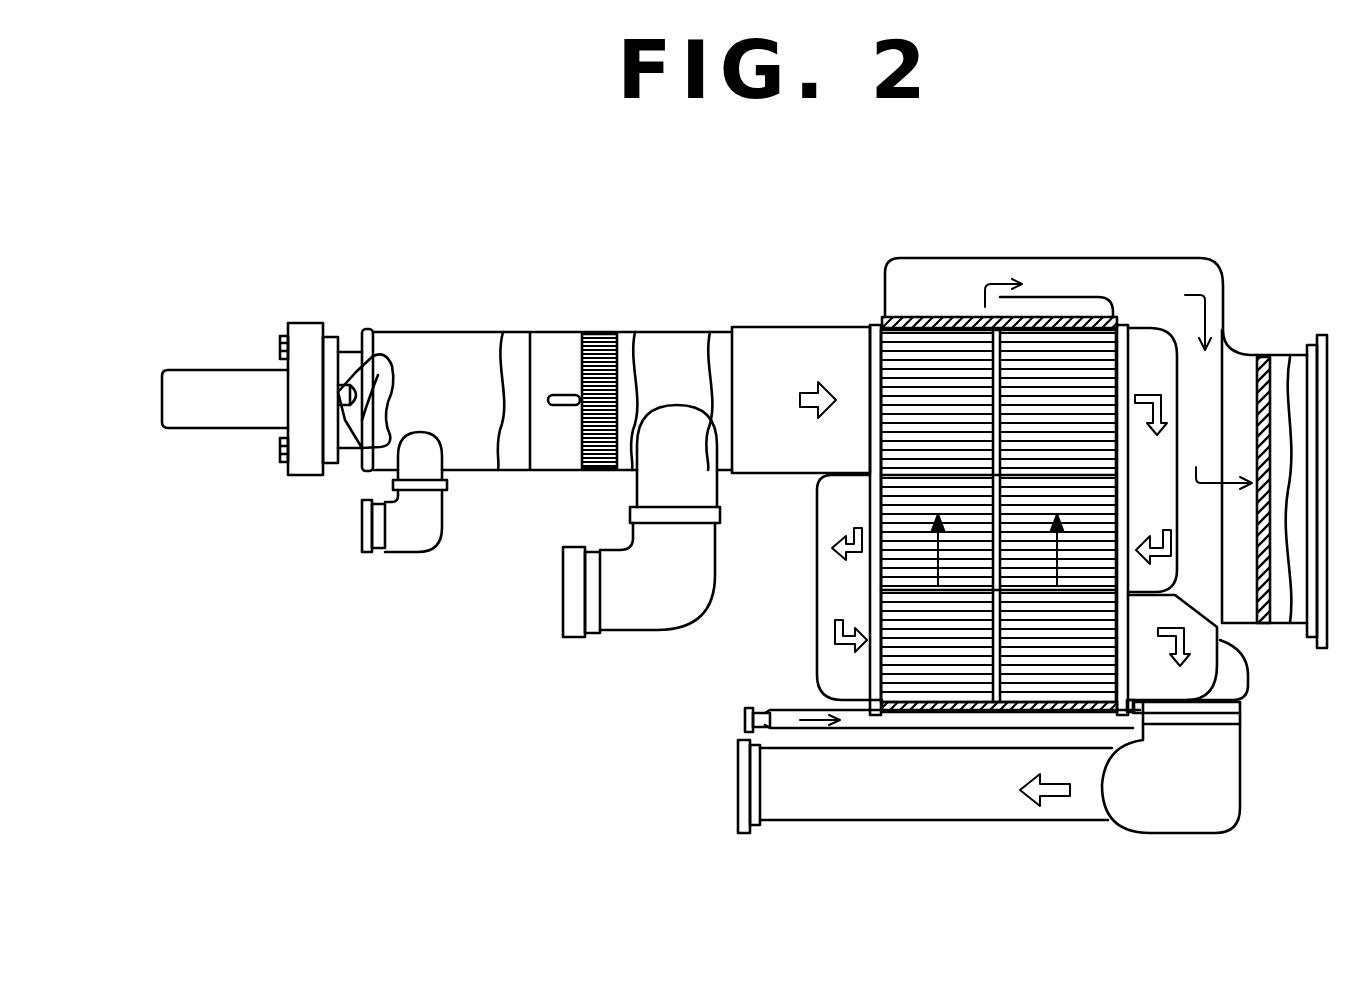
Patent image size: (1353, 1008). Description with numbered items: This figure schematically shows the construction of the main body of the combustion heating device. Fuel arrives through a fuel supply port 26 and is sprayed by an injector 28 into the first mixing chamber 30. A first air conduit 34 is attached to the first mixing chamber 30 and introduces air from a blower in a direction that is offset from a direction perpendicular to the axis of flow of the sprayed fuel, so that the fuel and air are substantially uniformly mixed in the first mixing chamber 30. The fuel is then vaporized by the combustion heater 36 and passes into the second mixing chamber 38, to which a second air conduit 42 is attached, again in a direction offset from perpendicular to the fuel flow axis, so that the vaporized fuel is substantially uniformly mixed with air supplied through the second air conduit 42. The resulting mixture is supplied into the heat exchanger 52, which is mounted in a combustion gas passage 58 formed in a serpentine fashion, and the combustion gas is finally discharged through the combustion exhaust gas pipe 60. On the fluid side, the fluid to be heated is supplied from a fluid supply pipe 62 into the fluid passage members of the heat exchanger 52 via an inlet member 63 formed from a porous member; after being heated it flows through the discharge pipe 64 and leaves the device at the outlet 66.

The fuel supply port 26 is at (146, 378).
The injector 28 is at (382, 380).
The first mixing chamber 30 is at (450, 350).
The first air conduit 34 is at (410, 530).
The combustion heater 36 is at (603, 332).
The second mixing chamber 38 is at (668, 332).
The second air conduit 42 is at (640, 618).
The heat exchanger 52 is at (880, 555).
The combustion gas passage 58 is at (1145, 355).
The combustion exhaust gas pipe 60 is at (1072, 822).
The fluid supply pipe 62 is at (980, 722).
The inlet member 63 is at (903, 712).
The discharge pipe 64 is at (988, 262).
The outlet 66 is at (1240, 375).